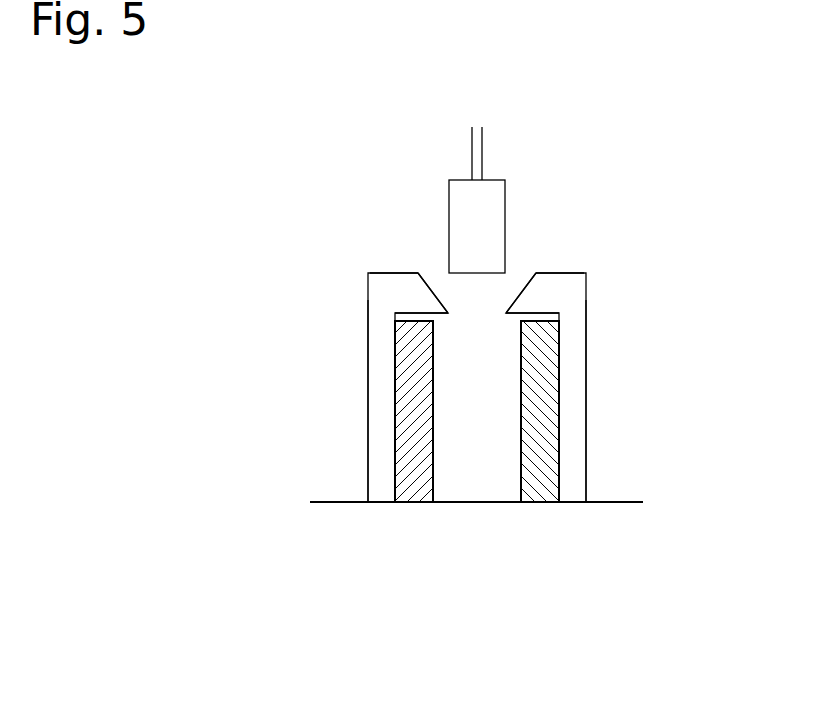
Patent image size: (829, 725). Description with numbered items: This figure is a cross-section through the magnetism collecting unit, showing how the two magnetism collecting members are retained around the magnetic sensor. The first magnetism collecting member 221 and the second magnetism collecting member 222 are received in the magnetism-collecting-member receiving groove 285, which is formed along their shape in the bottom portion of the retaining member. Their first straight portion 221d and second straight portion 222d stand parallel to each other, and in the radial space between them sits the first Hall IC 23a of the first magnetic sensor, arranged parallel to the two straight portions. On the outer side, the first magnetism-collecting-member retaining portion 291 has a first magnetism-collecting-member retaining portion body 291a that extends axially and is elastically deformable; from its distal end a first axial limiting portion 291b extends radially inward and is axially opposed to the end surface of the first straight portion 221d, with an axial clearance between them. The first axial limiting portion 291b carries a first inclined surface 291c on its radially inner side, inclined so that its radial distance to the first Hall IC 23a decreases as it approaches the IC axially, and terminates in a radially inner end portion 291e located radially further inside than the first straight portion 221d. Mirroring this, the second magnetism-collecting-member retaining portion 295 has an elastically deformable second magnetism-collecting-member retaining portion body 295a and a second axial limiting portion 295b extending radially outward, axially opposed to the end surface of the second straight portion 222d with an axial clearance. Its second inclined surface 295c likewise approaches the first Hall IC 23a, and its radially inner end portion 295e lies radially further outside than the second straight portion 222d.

The first Hall IC 23a is at (490, 202).
The first magnetism-collecting-member retaining portion 291 is at (360, 333).
The first magnetism-collecting-member retaining portion body 291a is at (380, 417).
The first axial limiting portion 291b is at (385, 278).
The first inclined surface 291c is at (433, 287).
The radially inner end portion 291e is at (448, 313).
The second magnetism-collecting-member retaining portion 295 is at (595, 327).
The second magnetism-collecting-member retaining portion body 295a is at (577, 412).
The second axial limiting portion 295b is at (575, 283).
The second inclined surface 295c is at (524, 283).
The radially inner end portion 295e is at (506, 313).
The first magnetism collecting member 221 is at (408, 510).
The first straight portion 221d is at (407, 472).
The second magnetism collecting member 222 is at (550, 510).
The second straight portion 222d is at (542, 463).
The magnetism-collecting-member receiving groove 285 is at (607, 502).